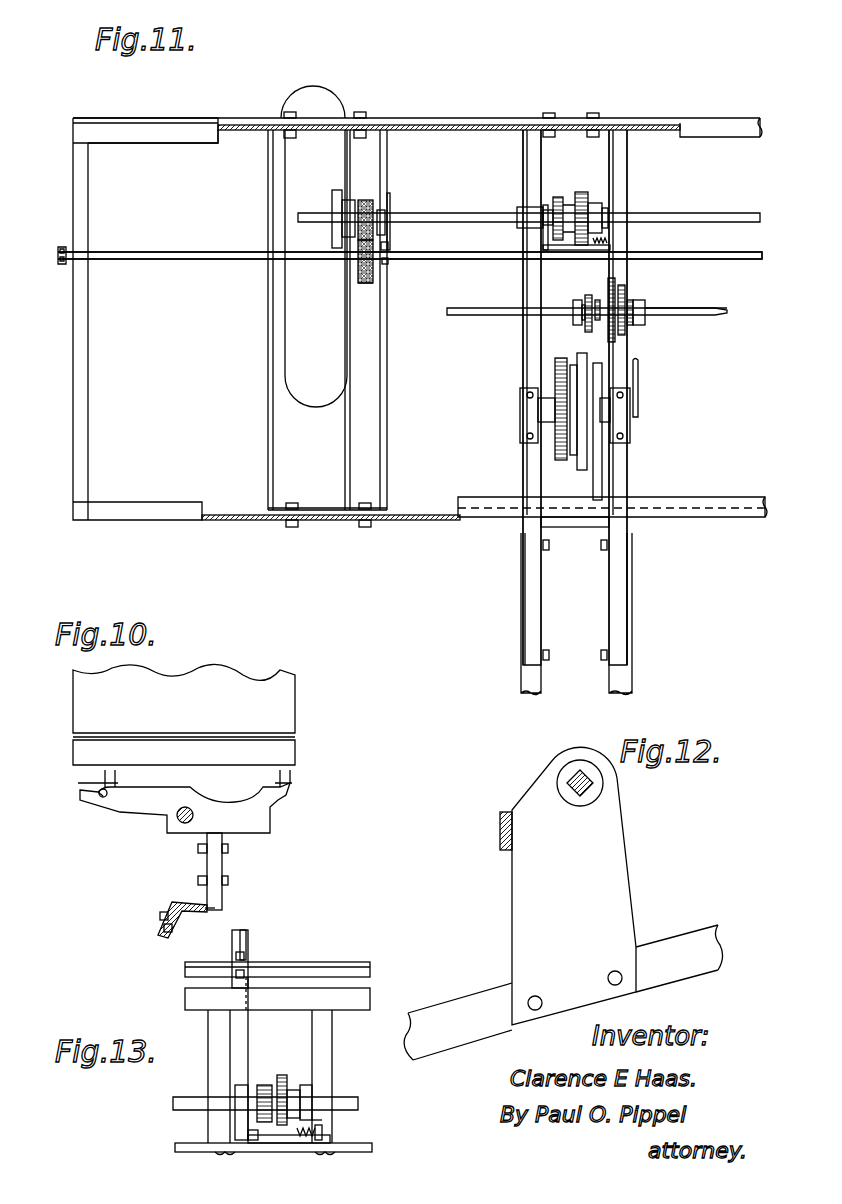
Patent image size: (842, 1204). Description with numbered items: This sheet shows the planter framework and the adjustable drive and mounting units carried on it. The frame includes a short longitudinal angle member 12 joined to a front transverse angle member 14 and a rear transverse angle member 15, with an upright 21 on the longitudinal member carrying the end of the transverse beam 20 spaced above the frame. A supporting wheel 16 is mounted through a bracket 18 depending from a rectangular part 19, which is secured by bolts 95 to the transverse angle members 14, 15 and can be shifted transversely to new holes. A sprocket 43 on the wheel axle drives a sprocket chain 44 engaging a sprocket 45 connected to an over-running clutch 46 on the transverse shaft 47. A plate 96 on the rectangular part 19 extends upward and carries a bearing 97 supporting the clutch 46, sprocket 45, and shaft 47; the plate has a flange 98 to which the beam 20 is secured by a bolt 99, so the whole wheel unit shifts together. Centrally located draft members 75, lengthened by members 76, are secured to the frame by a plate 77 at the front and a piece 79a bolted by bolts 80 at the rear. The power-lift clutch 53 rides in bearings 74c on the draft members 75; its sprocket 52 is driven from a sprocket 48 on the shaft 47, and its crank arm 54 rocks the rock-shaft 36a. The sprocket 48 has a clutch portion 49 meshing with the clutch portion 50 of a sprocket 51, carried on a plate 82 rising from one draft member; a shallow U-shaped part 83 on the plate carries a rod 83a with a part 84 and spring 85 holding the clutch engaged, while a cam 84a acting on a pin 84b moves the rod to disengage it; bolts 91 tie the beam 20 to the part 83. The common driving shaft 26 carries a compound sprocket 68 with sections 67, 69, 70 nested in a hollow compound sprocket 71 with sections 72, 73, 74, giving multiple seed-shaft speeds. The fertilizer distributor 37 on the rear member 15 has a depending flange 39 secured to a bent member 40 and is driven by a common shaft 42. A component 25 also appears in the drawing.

In FIG. 11, the short longitudinal angle member 12 is at (78, 388).
In FIG. 11, the front transverse angle member 14 is at (155, 513).
In FIG. 11, the rear transverse angle member 15 is at (133, 130).
In FIG. 10, the rear transverse angle member 15 is at (172, 903).
In FIG. 11, the supporting wheel 16 is at (330, 98).
In FIG. 11, the bracket 18 is at (390, 308).
In FIG. 11, the rectangular part 19 is at (390, 392).
In FIG. 12, the rectangular part 19 is at (472, 1002).
In FIG. 11, the transverse beam 20 is at (143, 258).
In FIG. 12, the transverse beam 20 is at (498, 825).
In FIG. 11, the upright 21 is at (60, 250).
In FIG. 11, the top box 25 is at (145, 114).
In FIG. 11, the common driving shaft 26 is at (714, 314).
In FIG. 13, the rock-shaft 36a is at (318, 962).
In FIG. 10, the fertilizer distributor 37 is at (285, 706).
In FIG. 10, the depending flange 39 is at (222, 865).
In FIG. 10, the bent member 40 is at (210, 912).
In FIG. 13, the bent member 40 is at (247, 948).
In FIG. 10, the common shaft 42 is at (177, 822).
In FIG. 11, the sprocket 43 is at (365, 288).
In FIG. 11, the sprocket chain 44 is at (358, 272).
In FIG. 11, the sprocket 45 is at (357, 205).
In FIG. 11, the over-running clutch 46 is at (350, 222).
In FIG. 11, the transverse shaft 47 is at (425, 214).
In FIG. 12, the transverse shaft 47 is at (596, 783).
In FIG. 11, the sprocket 48 is at (553, 222).
In FIG. 11, the clutch portion 49 is at (558, 198).
In FIG. 13, the clutch portion 49 is at (262, 1090).
In FIG. 11, the clutch portion 50 is at (590, 205).
In FIG. 13, the clutch portion 50 is at (282, 1090).
In FIG. 11, the sprocket 51 is at (586, 196).
In FIG. 13, the sprocket 51 is at (285, 1078).
In FIG. 11, the sprocket 52 is at (558, 440).
In FIG. 11, the power-lift clutch 53 is at (572, 460).
In FIG. 11, the crank arm 54 is at (638, 372).
In FIG. 11, the small sprocket section 67 is at (597, 300).
In FIG. 11, the compound sprocket 68 is at (573, 312).
In FIG. 11, the intermediate sprocket 69 is at (585, 300).
In FIG. 11, the large sprocket section 70 is at (580, 325).
In FIG. 11, the hollow compound sprocket 71 is at (650, 303).
In FIG. 11, the small sprocket section 72 is at (625, 322).
In FIG. 11, the intermediate sprocket section 73 is at (625, 295).
In FIG. 11, the large sprocket section 74 is at (622, 340).
In FIG. 11, the bearing 74c is at (676, 420).
In FIG. 11, the draft member 75 is at (615, 625).
In FIG. 11, the member 76 is at (615, 678).
In FIG. 11, the plate 77 is at (590, 527).
In FIG. 11, the piece 79a is at (547, 137).
In FIG. 11, the bolt 80 is at (593, 113).
In FIG. 11, the plate 82 is at (540, 210).
In FIG. 11, the shallow U-shaped part 83 is at (618, 250).
In FIG. 13, the shallow U-shaped part 83 is at (325, 1133).
In FIG. 11, the rod 83a is at (545, 250).
In FIG. 13, the rod 83a is at (275, 1143).
In FIG. 13, the part 84 is at (300, 1136).
In FIG. 13, the cam 84a is at (240, 1120).
In FIG. 13, the pin 84b is at (255, 1137).
In FIG. 11, the spring 85 is at (608, 240).
In FIG. 13, the spring 85 is at (320, 1120).
In FIG. 12, the bolt 91 is at (566, 776).
In FIG. 11, the bolt 95 is at (365, 503).
In FIG. 11, the plate 96 is at (388, 205).
In FIG. 12, the plate 96 is at (625, 872).
In FIG. 11, the bearing 97 is at (391, 210).
In FIG. 11, the flange 98 is at (388, 262).
In FIG. 11, the bolt 99 is at (390, 246).